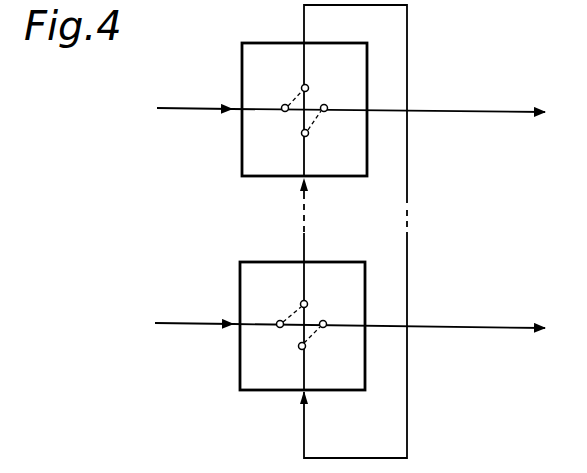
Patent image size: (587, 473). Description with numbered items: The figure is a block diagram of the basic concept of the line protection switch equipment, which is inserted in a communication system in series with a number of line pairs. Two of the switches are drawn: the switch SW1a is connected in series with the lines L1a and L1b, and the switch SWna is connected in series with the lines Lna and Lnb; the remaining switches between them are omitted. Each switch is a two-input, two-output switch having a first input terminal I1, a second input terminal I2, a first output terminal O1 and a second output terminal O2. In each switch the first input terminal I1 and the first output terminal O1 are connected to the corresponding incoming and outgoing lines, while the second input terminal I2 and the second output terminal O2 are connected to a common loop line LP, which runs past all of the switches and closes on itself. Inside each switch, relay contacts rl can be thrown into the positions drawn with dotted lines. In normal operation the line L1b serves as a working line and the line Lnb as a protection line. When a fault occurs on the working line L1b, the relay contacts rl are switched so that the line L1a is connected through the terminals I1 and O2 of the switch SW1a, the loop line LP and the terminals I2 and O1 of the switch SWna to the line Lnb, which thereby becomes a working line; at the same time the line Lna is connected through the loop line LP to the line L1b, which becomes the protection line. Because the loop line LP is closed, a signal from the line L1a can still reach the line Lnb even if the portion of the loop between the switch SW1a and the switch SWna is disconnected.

The two-input and two-output switch SW1a is at (255, 43).
The two-input and two-output switch SWna is at (258, 262).
The line L1a is at (194, 94).
The line L1b is at (388, 98).
The line Lna is at (194, 311).
The line Lnb is at (389, 315).
The loop line LP is at (305, 232).
The relay contacts rl is at (315, 98).
The first output terminal O1 is at (336, 229).
The second output terminal O2 is at (289, 186).
The first input terminal I1 is at (278, 229).
The second input terminal I2 is at (313, 253).